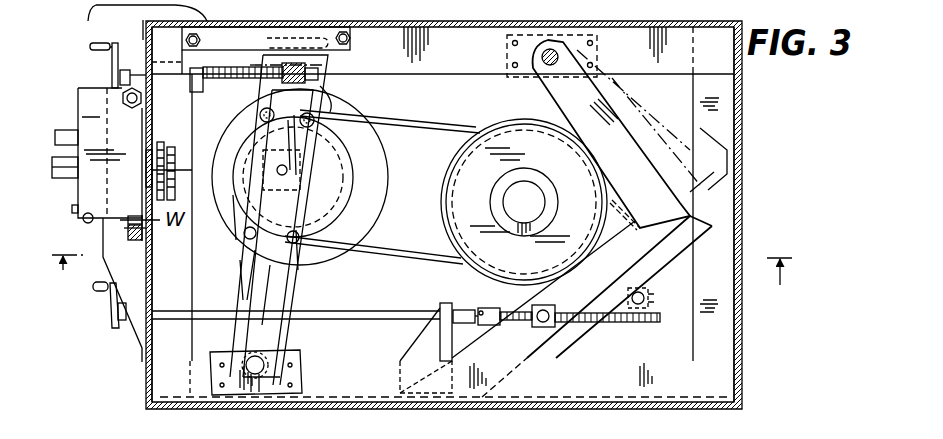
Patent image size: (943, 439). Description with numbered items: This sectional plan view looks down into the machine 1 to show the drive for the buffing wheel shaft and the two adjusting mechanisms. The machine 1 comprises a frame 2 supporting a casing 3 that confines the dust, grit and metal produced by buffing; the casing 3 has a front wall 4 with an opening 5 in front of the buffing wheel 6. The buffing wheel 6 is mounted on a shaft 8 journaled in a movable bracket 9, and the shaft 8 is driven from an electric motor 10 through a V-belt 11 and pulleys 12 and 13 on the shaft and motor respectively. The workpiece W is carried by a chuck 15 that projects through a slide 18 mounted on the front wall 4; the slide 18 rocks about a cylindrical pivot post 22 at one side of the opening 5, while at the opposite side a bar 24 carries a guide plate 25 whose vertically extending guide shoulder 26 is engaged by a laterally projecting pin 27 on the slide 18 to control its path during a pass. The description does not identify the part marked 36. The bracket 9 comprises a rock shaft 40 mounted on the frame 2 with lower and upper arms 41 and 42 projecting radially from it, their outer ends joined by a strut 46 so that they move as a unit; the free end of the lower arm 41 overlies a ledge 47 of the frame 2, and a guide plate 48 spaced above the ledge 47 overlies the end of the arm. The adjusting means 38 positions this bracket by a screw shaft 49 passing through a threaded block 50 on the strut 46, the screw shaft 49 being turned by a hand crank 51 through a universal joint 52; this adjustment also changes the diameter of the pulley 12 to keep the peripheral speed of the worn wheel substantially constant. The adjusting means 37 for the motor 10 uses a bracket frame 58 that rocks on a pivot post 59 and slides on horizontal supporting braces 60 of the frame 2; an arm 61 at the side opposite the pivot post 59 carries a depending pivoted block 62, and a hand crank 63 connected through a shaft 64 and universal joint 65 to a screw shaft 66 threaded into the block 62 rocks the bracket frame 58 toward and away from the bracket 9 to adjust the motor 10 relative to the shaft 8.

The machine 1 is at (754, 140).
The frame 2 is at (604, 25).
The casing 3 is at (745, 194).
The front wall 4 is at (145, 372).
The opening 5 is at (139, 82).
The buffing wheel 6 is at (322, 87).
The shaft 8 is at (334, 208).
The movable bracket 9 is at (289, 288).
The electric motor 10 is at (467, 164).
The V-belt 11 is at (401, 256).
The pulley 12 is at (346, 172).
The pulley 13 is at (441, 214).
The chuck 15 is at (162, 146).
The slide 18 is at (93, 94).
The pivot post 22 is at (130, 108).
The bar 24 is at (135, 241).
The guide plate 25 is at (128, 227).
The guide shoulder 26 is at (136, 216).
The pin 27 is at (146, 221).
The cover 36 is at (88, 21).
The adjusting means 37 is at (400, 322).
The adjusting means 38 is at (241, 87).
The rock shaft 40 is at (266, 390).
The lower arm 41 is at (288, 325).
The upper arm 42 is at (247, 283).
The strut 46 is at (243, 82).
The ledge 47 is at (407, 43).
The guide plate 48 is at (250, 44).
The screw shaft 49 is at (246, 69).
The threaded block 50 is at (320, 86).
The hand crank 51 is at (112, 62).
The universal joint 52 is at (198, 84).
The bracket frame 58 is at (512, 103).
The pivot post 59 is at (547, 46).
The supporting braces 60 is at (555, 338).
The arm 61 is at (536, 304).
The pivoted block 62 is at (530, 326).
The hand crank 63 is at (112, 315).
The shaft 64 is at (399, 290).
The universal joint 65 is at (468, 304).
The screw shaft 66 is at (634, 323).